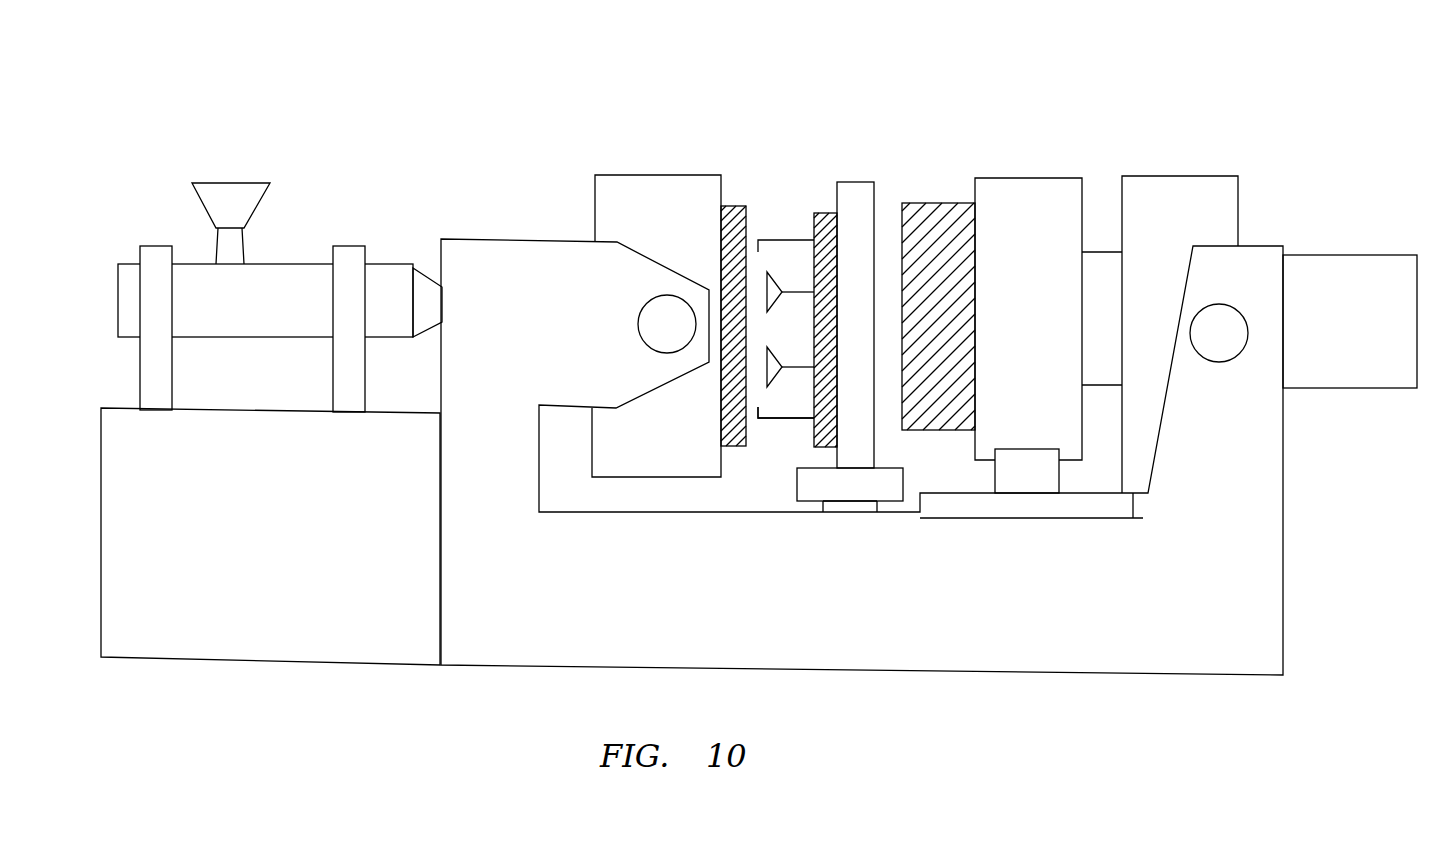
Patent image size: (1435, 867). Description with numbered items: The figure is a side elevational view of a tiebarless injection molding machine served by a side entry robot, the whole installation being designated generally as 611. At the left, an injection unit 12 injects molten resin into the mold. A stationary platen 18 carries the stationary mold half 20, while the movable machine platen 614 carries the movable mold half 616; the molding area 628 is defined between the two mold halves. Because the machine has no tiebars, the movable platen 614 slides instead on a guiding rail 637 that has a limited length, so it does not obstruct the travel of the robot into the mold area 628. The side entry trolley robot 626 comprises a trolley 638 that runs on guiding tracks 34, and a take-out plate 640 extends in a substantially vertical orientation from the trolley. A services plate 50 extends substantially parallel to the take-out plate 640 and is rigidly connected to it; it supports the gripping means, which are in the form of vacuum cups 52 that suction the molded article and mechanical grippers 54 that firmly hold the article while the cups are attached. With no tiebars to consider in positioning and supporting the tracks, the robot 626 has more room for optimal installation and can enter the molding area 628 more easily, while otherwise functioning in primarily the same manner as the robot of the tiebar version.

The injection unit 12 is at (282, 270).
The stationary platen 18 is at (653, 178).
The stationary mold half 20 is at (732, 208).
The guiding tracks 34 is at (860, 510).
The services plate 50 is at (830, 213).
The vacuum cups 52 is at (773, 238).
The mechanical grippers 54 is at (783, 420).
The injection molding system 611 is at (982, 88).
The movable machine platen 614 is at (1038, 185).
The movable mold half 616 is at (933, 215).
The side entry trolley robot 626 is at (840, 557).
The molding area 628 is at (733, 483).
The guiding rail 637 is at (1060, 508).
The trolley 638 is at (810, 493).
The take-out plate 640 is at (855, 192).